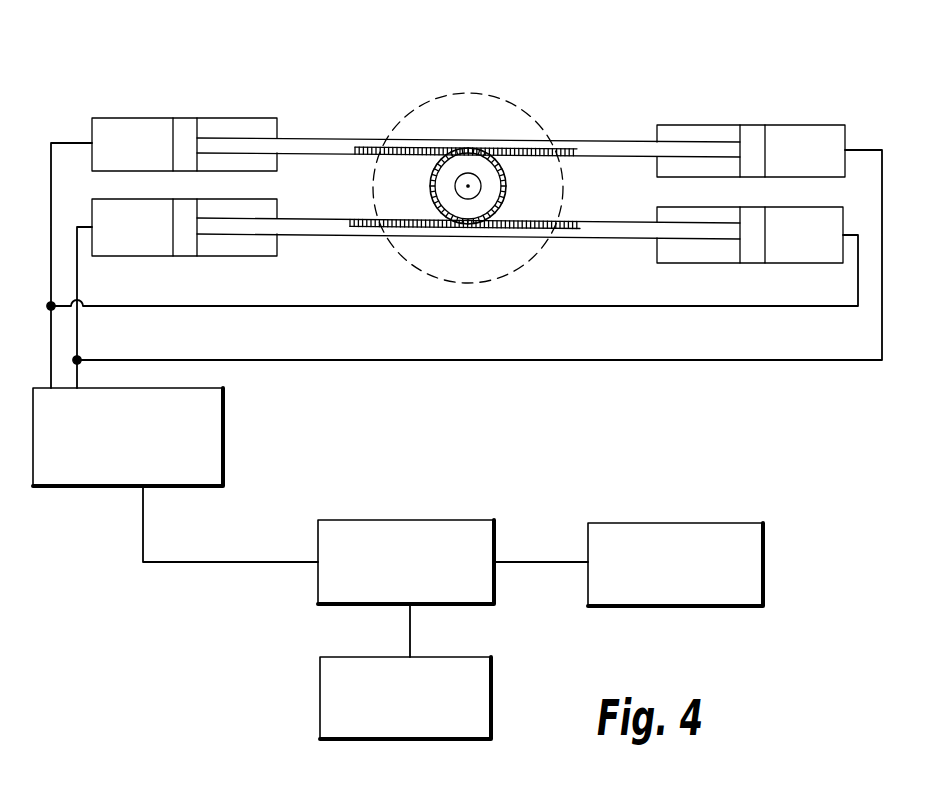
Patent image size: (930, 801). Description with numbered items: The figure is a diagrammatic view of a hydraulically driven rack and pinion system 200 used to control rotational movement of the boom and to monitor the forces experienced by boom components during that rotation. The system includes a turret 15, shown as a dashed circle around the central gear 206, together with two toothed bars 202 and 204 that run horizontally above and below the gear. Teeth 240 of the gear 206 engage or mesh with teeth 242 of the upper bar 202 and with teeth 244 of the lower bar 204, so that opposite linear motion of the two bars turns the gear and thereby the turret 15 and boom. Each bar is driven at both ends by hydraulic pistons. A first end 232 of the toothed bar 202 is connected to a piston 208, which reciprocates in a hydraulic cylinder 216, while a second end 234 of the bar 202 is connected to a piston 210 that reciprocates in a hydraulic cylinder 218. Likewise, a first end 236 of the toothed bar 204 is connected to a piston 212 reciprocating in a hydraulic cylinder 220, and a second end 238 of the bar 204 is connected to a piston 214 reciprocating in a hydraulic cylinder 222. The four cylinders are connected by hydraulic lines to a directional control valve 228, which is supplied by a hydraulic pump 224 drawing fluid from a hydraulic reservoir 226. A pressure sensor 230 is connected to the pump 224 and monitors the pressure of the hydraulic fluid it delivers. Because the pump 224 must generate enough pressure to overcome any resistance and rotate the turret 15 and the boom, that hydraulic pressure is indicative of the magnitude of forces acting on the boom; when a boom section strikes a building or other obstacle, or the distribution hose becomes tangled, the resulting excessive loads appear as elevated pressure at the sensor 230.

The rack and pinion system 200 is at (137, 63).
The turret 15 is at (442, 95).
The toothed bar 202 is at (296, 137).
The toothed bar 204 is at (590, 232).
The gear 206 is at (484, 185).
The hydraulic piston 208 is at (178, 116).
The hydraulic piston 210 is at (750, 134).
The hydraulic piston 212 is at (183, 242).
The hydraulic piston 214 is at (752, 247).
The hydraulic cylinder 216 is at (105, 117).
The hydraulic cylinder 218 is at (775, 124).
The hydraulic cylinder 220 is at (97, 258).
The hydraulic cylinder 222 is at (782, 266).
The hydraulic pump 224 is at (385, 519).
The hydraulic reservoir 226 is at (615, 522).
The directional control valve 228 is at (224, 432).
The pressure sensor 230 is at (347, 740).
The first end 232 is at (215, 148).
The second end 234 is at (682, 147).
The first end 236 is at (208, 226).
The second end 238 is at (691, 230).
The teeth 240 is at (430, 184).
The teeth 242 is at (560, 154).
The teeth 244 is at (338, 229).